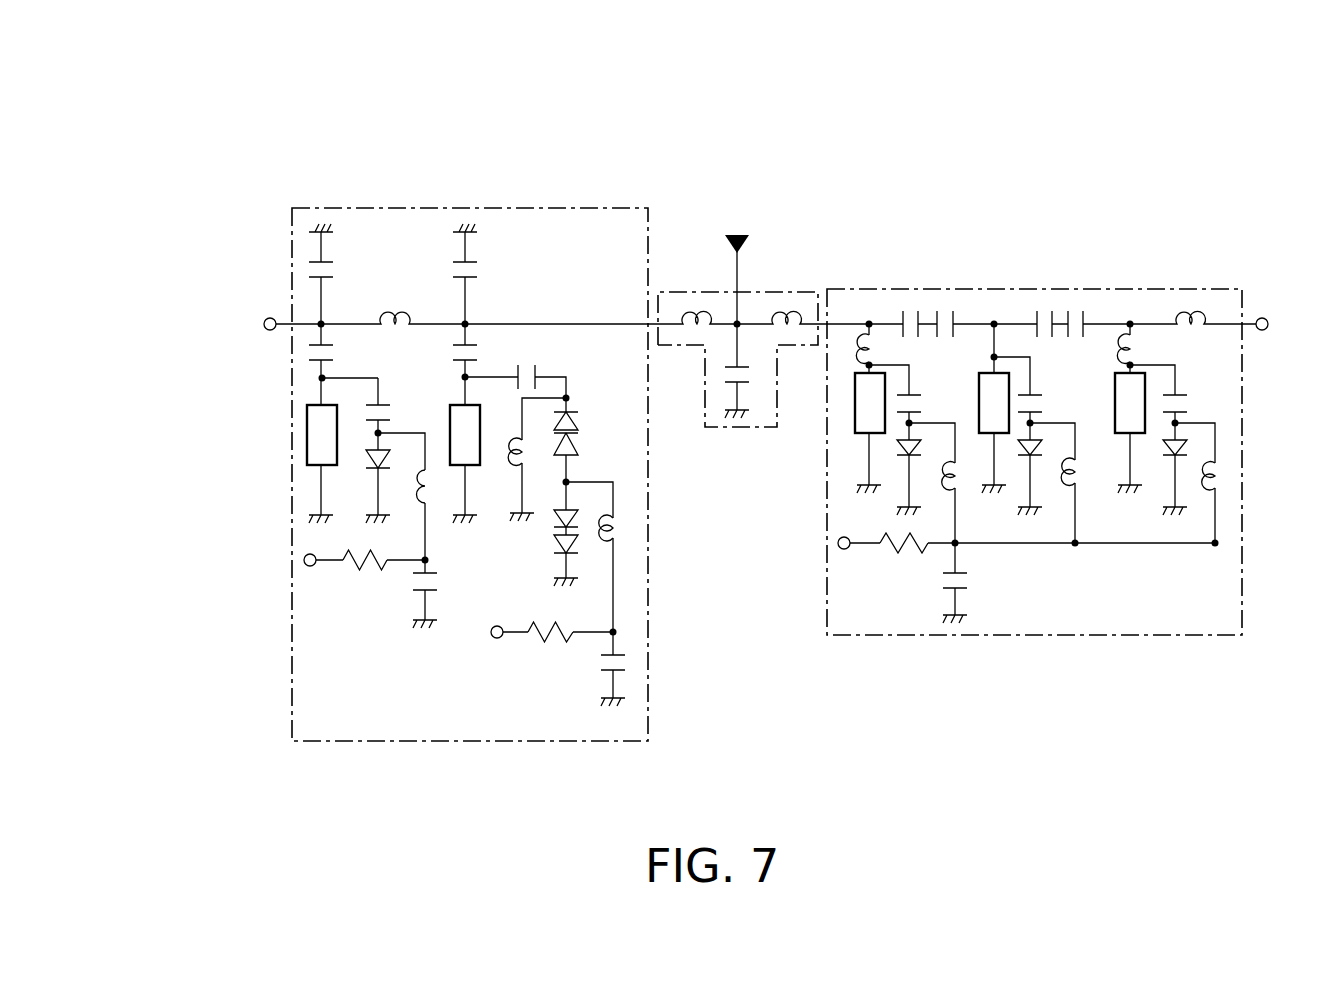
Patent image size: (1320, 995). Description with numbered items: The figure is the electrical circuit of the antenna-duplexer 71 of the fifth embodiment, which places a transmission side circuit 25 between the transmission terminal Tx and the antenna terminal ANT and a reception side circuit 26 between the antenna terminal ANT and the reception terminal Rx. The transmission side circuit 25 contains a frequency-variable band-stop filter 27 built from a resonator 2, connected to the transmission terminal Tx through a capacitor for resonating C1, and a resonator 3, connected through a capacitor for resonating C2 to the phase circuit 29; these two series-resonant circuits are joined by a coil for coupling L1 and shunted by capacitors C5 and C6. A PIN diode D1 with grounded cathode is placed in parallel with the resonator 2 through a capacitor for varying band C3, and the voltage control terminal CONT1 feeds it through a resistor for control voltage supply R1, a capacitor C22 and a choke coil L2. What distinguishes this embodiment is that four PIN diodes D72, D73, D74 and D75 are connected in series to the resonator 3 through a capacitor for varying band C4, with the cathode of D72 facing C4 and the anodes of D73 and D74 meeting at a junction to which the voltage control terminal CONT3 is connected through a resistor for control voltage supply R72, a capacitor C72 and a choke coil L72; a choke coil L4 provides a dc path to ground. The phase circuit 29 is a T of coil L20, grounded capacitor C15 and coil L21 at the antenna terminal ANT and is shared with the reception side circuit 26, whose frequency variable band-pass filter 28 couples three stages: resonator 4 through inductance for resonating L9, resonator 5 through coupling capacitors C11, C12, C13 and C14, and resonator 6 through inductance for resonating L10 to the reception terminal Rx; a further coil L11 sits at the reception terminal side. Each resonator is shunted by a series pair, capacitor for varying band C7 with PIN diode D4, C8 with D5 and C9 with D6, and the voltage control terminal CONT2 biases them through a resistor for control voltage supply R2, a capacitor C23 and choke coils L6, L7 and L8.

The antenna-duplexer 71 is at (295, 182).
The transmission side circuit 25 is at (550, 180).
The reception side circuit 26 is at (977, 240).
The frequency-variable band-stop filter 27 is at (398, 205).
The frequency-variable band-pass filter 28 is at (982, 285).
The phase circuit 29 is at (805, 288).
The antenna terminal ANT is at (737, 232).
The transmission terminal Tx is at (268, 332).
The reception terminal Rx is at (1264, 332).
The voltage control terminal CONT1 is at (306, 555).
The voltage control terminal CONT2 is at (840, 549).
The voltage control terminal CONT3 is at (494, 638).
The resonator 2 is at (338, 455).
The resonator 3 is at (481, 455).
The resonator 4 is at (855, 415).
The resonator 5 is at (979, 400).
The resonator 6 is at (1115, 400).
The capacitor for resonating C1 is at (332, 348).
The capacitor for resonating C2 is at (476, 348).
The capacitor for varying band C3 is at (389, 404).
The capacitor for varying band C4 is at (540, 371).
The capacitor C5 is at (332, 262).
The capacitor C6 is at (477, 262).
The capacitor for varying band C7 is at (916, 398).
The capacitor for varying band C8 is at (1036, 398).
The capacitor for varying band C9 is at (1196, 397).
The coupling capacitor C11 is at (902, 316).
The coupling capacitor C12 is at (937, 316).
The coupling capacitor C13 is at (1052, 312).
The coupling capacitor C14 is at (1085, 316).
The capacitor C15 is at (747, 385).
The capacitor C22 is at (413, 589).
The capacitor C23 is at (966, 588).
The capacitor C72 is at (624, 670).
The coil for coupling L1 is at (398, 321).
The choke coil L2 is at (430, 530).
The choke coil L4 is at (530, 458).
The choke coil L6 is at (964, 483).
The choke coil L7 is at (1084, 483).
The choke coil L8 is at (1224, 483).
The inductance for resonating L9 is at (878, 345).
The inductance for resonating L10 is at (1140, 345).
The inductor L11 is at (1200, 317).
The coil L20 is at (700, 317).
The coil L21 is at (790, 317).
The choke coil L72 is at (622, 528).
The PIN diode D1 is at (392, 456).
The PIN diode D4 is at (920, 446).
The PIN diode D5 is at (1041, 450).
The PIN diode D6 is at (1186, 450).
The PIN diode D72 is at (580, 419).
The PIN diode D73 is at (580, 449).
The PIN diode D74 is at (556, 521).
The PIN diode D75 is at (560, 546).
The resistor for control voltage supply R1 is at (360, 571).
The resistor for control voltage supply R2 is at (905, 565).
The resistor for control voltage supply R72 is at (540, 640).